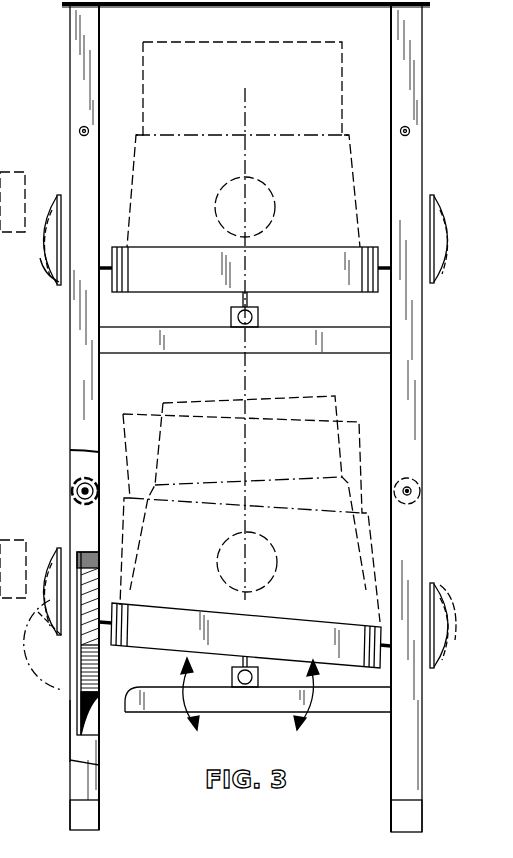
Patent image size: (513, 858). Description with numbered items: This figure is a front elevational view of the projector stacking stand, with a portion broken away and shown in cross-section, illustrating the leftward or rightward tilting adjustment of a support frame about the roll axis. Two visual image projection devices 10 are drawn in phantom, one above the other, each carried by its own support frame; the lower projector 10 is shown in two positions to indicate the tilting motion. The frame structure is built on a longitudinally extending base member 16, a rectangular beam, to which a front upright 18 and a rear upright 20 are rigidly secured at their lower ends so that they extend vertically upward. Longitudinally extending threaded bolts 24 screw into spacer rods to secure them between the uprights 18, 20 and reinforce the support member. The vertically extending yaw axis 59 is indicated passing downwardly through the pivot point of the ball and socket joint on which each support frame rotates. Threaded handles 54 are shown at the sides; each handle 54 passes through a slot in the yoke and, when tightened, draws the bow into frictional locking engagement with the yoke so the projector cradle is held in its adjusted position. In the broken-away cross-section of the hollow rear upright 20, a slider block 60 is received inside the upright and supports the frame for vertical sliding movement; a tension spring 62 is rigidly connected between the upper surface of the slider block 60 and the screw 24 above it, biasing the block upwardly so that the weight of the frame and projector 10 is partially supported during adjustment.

The visual image projection device 10 is at (336, 94).
The base member 16 is at (100, 817).
The front upright 18 is at (100, 786).
The rear upright 20 is at (100, 742).
The threaded bolt 24 is at (79, 131).
The threaded handle 54 is at (57, 282).
The yaw axis 59 is at (245, 95).
The slider block 60 is at (82, 632).
The tension spring 62 is at (77, 560).